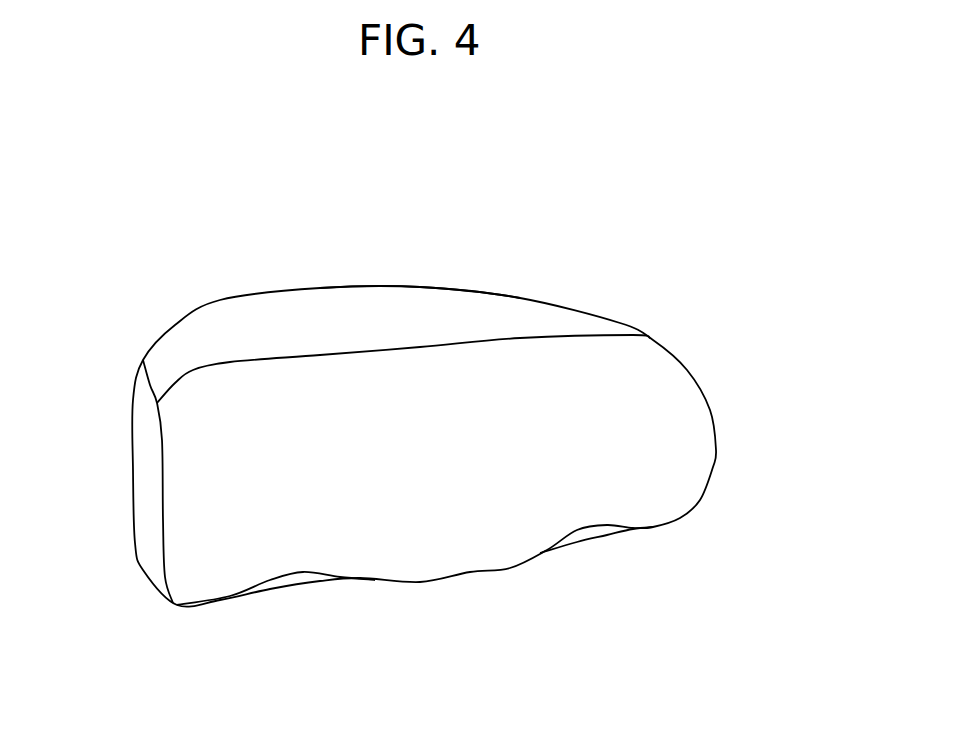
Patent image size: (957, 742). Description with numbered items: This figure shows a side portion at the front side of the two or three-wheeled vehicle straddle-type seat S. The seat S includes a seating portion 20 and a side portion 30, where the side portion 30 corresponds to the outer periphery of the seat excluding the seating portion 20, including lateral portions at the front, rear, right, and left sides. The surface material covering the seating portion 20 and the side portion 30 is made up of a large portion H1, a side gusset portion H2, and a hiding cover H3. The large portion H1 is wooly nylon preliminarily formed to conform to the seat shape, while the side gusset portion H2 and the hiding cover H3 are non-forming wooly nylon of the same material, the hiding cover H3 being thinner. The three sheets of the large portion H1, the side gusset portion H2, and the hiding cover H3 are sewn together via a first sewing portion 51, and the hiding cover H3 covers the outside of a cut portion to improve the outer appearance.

The two or three-wheeled vehicle straddle-type seat S is at (89, 173).
The seating portion 20 is at (270, 268).
The side portion 30 is at (742, 442).
The first sewing portion 51 is at (508, 340).
The large portion H1 is at (427, 312).
The side gusset portion H2 is at (143, 493).
The hiding cover H3 is at (328, 513).